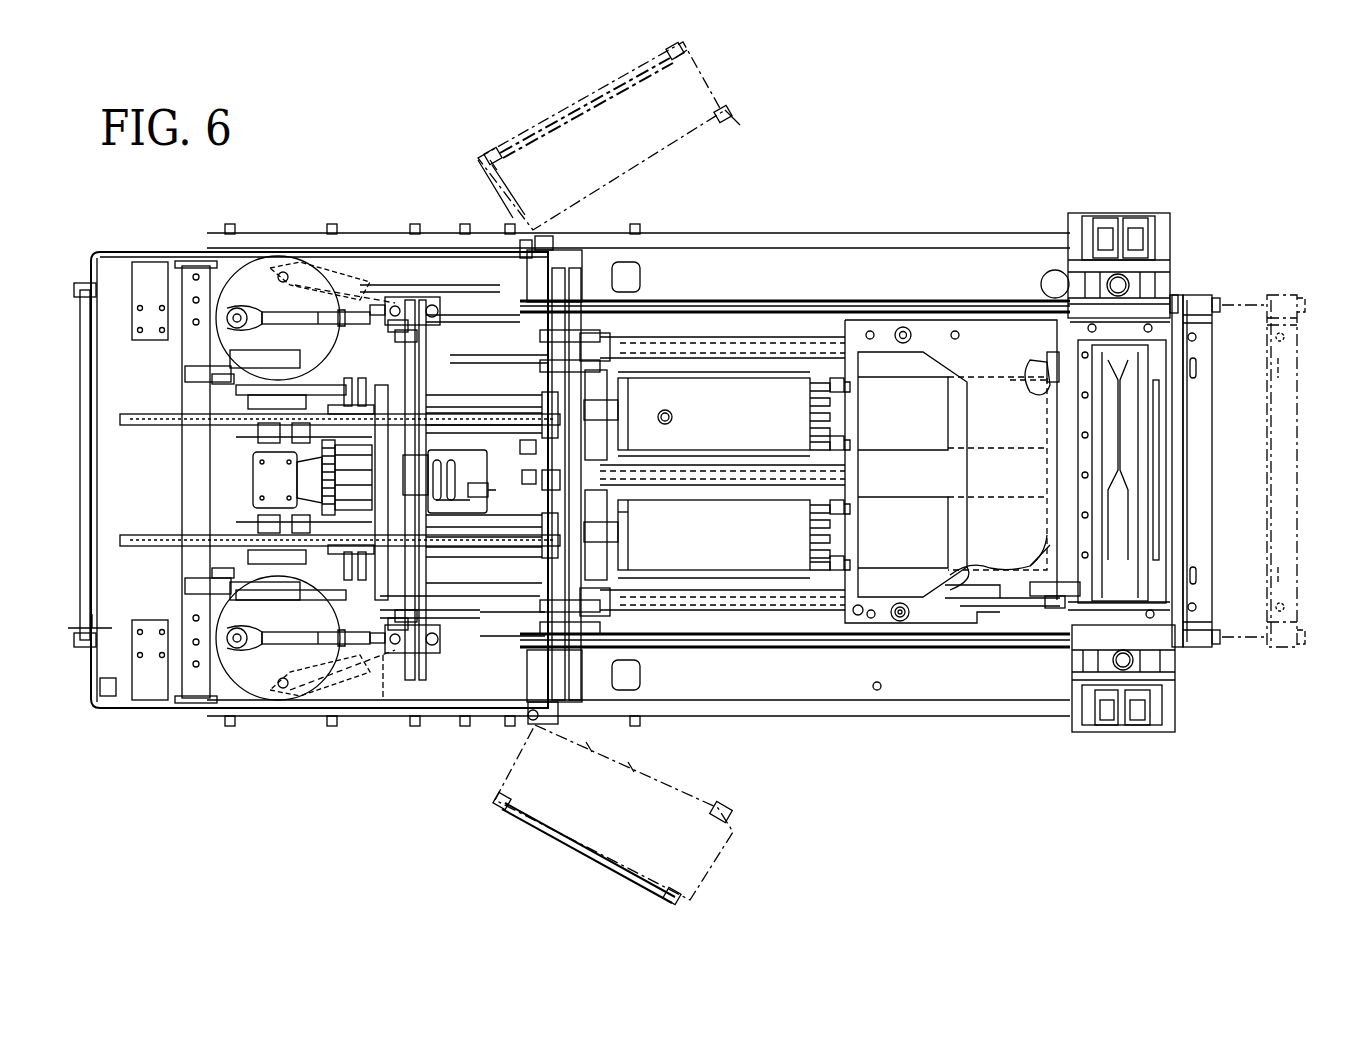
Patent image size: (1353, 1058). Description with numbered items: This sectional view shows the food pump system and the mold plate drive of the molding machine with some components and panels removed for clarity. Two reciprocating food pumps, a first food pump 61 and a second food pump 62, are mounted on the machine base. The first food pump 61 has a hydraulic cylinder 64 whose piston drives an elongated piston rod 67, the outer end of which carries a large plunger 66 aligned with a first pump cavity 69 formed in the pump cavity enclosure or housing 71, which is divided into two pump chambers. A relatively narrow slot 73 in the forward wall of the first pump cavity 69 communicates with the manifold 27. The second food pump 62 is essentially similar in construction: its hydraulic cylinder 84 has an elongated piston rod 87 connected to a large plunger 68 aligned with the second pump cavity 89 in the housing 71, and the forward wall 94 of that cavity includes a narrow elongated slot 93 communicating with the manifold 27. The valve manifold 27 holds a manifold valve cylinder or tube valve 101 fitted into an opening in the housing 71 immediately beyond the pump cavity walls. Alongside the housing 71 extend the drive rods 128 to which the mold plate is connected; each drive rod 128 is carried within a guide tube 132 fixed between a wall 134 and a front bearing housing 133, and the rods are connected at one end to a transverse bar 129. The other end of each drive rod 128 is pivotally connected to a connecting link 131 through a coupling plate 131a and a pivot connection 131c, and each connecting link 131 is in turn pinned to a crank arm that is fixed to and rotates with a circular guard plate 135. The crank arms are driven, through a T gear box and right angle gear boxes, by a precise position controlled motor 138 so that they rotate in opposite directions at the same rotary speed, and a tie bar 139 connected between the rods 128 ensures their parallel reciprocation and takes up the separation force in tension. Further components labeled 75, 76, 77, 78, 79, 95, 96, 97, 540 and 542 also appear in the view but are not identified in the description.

The valve manifold 27 is at (1060, 395).
The first food pump 61 is at (782, 590).
The second food pump 62 is at (787, 368).
The hydraulic cylinder 64 is at (462, 578).
The plunger 66 is at (677, 575).
The elongated piston rod 67 is at (606, 527).
The plunger 68 is at (768, 378).
The first pump cavity 69 is at (990, 572).
The pump cavity enclosure or housing 71 is at (1045, 365).
The slot 73 is at (1050, 600).
The lower rack rod 75 is at (163, 535).
The phantom link 76 is at (363, 680).
The lower bolt cluster 77 is at (335, 575).
The lower shaft 78 is at (606, 562).
The upper shaft 79 is at (550, 392).
The hydraulic cylinder 84 is at (462, 385).
The elongated piston rod 87 is at (608, 405).
The second pump cavity 89 is at (975, 388).
The narrow elongated slot 93 is at (1050, 390).
The forward wall 94 is at (1047, 442).
The upper rack rod 95 is at (163, 412).
The upper bolt cluster 96 is at (362, 378).
The upper bracket 97 is at (338, 392).
The manifold valve cylinder or tube valve 101 is at (1047, 518).
The drive rods 128 is at (712, 300).
The transverse bar 129 is at (1205, 648).
The connecting link 131 is at (273, 307).
The coupling plate 131a is at (415, 300).
The pivot connection 131c is at (400, 645).
The guide tube 132 is at (877, 300).
The front bearing housing 133 is at (1080, 305).
The wall 134 is at (604, 706).
The circular guard plate 135 is at (228, 285).
The position controlled motor 138 is at (495, 457).
The tie bar 139 is at (427, 390).
The phantom shaft 540 is at (693, 478).
The cylinder joint line 542 is at (715, 458).